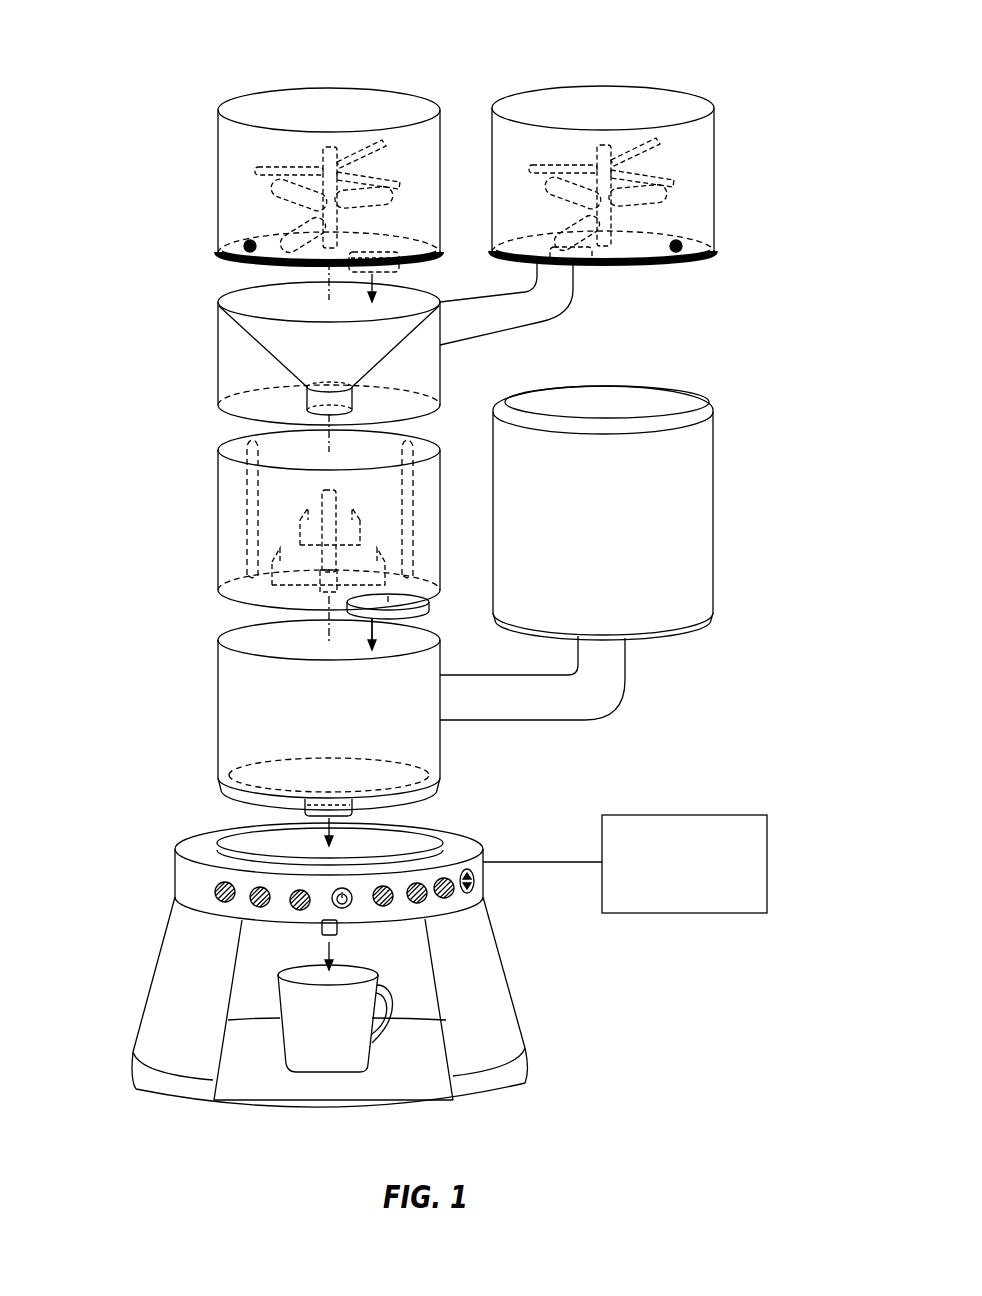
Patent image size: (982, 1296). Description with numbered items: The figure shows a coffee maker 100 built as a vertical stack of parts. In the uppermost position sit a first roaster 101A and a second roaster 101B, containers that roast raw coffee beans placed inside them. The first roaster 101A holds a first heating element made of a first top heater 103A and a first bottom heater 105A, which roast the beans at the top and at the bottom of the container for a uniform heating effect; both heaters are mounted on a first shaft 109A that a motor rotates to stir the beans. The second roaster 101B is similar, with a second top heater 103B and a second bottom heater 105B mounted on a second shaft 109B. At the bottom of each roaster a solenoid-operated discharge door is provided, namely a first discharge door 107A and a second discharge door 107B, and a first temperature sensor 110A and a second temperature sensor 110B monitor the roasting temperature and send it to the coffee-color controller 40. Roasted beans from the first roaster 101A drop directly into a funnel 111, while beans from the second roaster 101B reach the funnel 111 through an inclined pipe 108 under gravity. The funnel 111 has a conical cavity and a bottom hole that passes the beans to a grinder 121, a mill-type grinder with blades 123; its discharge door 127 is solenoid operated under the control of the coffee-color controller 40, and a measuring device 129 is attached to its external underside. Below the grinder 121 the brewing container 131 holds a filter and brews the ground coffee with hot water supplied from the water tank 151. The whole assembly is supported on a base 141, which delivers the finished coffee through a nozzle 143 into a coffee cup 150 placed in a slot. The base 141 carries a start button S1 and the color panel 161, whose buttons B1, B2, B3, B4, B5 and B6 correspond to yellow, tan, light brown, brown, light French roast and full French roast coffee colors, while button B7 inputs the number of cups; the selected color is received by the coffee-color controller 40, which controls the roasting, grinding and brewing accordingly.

The coffee maker 100 is at (746, 62).
The first roaster 101A is at (218, 172).
The second roaster 101B is at (714, 172).
The first top heater 103A is at (380, 143).
The second top heater 103B is at (655, 142).
The first bottom heater 105A is at (390, 205).
The second bottom heater 105B is at (667, 205).
The first discharge door 107A is at (400, 264).
The second discharge door 107B is at (575, 258).
The first shaft 109A is at (330, 145).
The second shaft 109B is at (602, 143).
The first temperature sensor 110A is at (244, 247).
The second temperature sensor 110B is at (677, 253).
The pipe 108 is at (565, 318).
The funnel 111 is at (218, 348).
The grinder 121 is at (218, 508).
The blades 123 is at (345, 525).
The discharge door 127 is at (412, 597).
The measuring device 129 is at (418, 613).
The brewing container 131 is at (218, 723).
The water tank 151 is at (713, 510).
The color panel 161 is at (178, 868).
The base 141 is at (146, 977).
The nozzle 143 is at (332, 937).
The coffee cup 150 is at (353, 1052).
The button B1 is at (222, 903).
The button B2 is at (260, 908).
The button B3 is at (300, 911).
The button B4 is at (386, 906).
The button B5 is at (421, 903).
The button B6 is at (448, 898).
The button B7 is at (473, 889).
The start button S1 is at (343, 909).
The coffee-color controller 40 is at (625, 864).